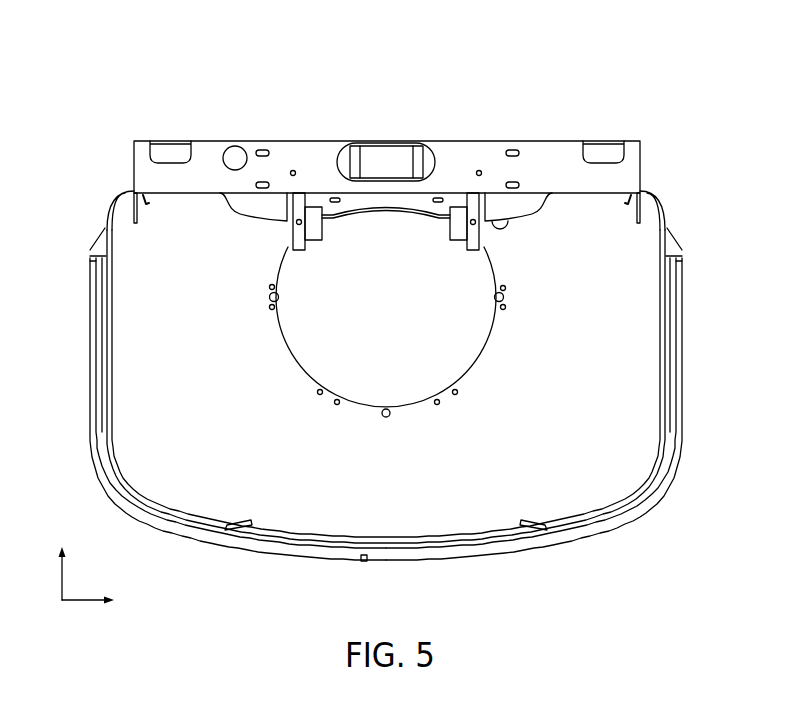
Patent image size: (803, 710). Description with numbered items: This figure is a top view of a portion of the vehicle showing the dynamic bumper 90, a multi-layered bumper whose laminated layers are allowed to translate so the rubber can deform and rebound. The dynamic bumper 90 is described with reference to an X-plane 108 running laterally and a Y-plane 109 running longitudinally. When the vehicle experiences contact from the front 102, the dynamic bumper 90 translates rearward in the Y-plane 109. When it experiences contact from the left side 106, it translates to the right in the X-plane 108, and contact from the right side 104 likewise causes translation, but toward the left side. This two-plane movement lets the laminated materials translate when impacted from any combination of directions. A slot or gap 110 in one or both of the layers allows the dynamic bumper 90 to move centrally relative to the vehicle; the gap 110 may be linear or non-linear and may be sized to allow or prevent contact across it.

The dynamic bumper 90 is at (386, 371).
The front 102 is at (262, 554).
The right side 104 is at (683, 352).
The left side 106 is at (90, 352).
The X-plane 108 is at (84, 601).
The Y-plane 109 is at (62, 578).
The slot or gap 110 is at (363, 561).